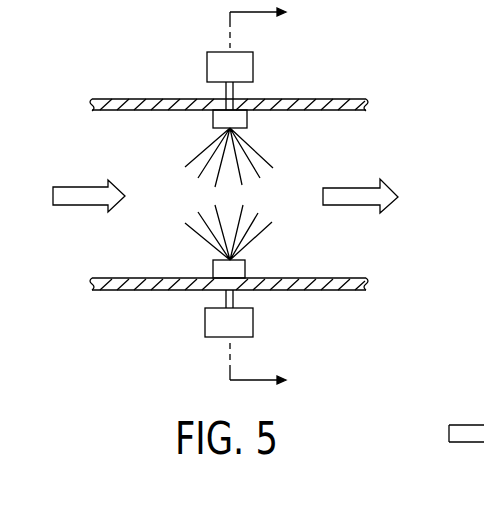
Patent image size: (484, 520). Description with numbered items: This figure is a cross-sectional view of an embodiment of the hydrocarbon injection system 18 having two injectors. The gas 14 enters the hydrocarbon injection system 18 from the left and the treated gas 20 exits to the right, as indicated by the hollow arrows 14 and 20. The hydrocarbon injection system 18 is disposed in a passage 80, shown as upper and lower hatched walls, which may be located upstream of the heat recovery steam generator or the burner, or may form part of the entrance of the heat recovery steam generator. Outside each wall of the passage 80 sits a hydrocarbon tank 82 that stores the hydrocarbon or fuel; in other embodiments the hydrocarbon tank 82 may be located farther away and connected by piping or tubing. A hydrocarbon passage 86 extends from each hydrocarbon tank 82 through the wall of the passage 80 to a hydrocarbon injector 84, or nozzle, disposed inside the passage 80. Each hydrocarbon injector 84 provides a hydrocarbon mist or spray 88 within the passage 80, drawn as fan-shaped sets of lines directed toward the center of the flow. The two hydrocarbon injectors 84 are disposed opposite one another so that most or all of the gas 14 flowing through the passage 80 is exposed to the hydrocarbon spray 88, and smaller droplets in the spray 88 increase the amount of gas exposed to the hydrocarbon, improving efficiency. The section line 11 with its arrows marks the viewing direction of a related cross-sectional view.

The section line / viewing direction 11 is at (244, 196).
The gas 14 is at (80, 186).
The hydrocarbon injection system 18 is at (398, 48).
The treated gas 20 is at (388, 183).
The passage 80 is at (343, 99).
The hydrocarbon tank 82 is at (253, 68).
The hydrocarbon injector 84 is at (247, 120).
The hydrocarbon passage 86 is at (226, 92).
The hydrocarbon spray 88 is at (187, 147).